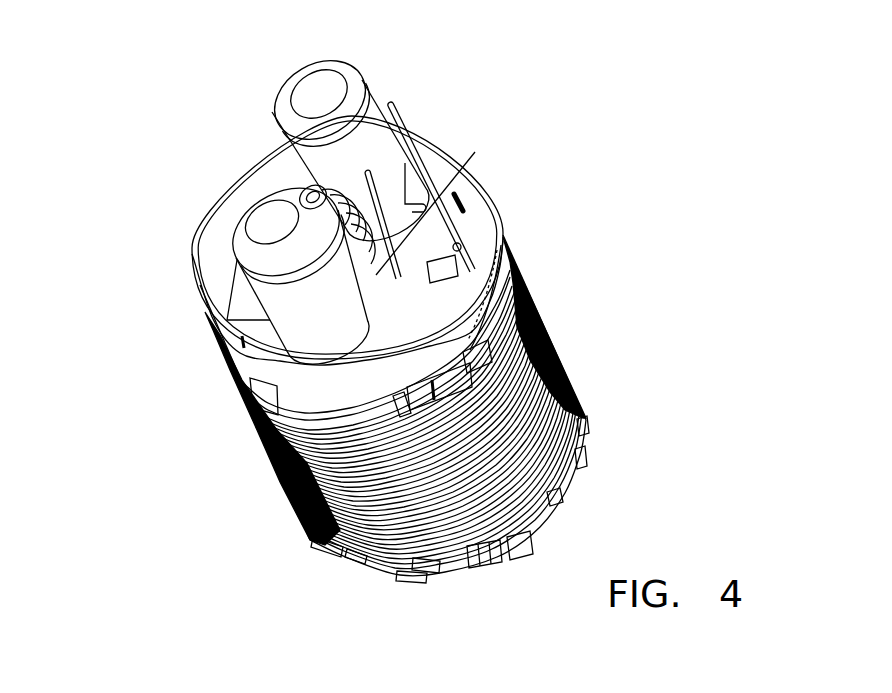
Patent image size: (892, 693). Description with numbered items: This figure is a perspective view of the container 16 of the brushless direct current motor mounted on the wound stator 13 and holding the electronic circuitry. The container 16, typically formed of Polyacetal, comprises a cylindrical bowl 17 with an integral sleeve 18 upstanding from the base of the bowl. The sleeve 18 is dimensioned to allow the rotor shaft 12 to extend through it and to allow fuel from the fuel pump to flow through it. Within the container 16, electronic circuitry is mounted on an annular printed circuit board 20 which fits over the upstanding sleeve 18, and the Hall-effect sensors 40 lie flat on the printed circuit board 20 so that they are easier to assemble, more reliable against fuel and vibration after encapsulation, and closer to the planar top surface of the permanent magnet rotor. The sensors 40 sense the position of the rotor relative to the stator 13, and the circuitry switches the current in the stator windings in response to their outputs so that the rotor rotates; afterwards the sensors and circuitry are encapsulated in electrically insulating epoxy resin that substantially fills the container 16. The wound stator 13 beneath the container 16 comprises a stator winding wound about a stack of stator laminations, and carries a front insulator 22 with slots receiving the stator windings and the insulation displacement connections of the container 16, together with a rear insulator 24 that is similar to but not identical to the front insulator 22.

The shaft 12 is at (286, 146).
The wound stator 13 is at (283, 482).
The container 16 is at (494, 232).
The cylindrical bowl 17 is at (227, 355).
The sleeve 18 is at (452, 190).
The printed circuit board 20 is at (440, 187).
The front insulator 22 is at (253, 418).
The rear insulator 24 is at (387, 573).
The Hall-effect sensors 40 is at (486, 226).